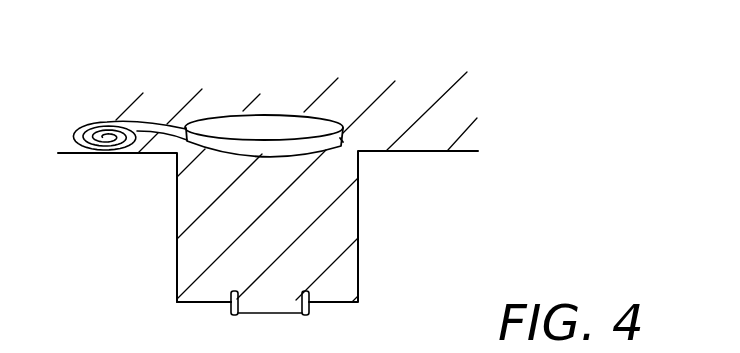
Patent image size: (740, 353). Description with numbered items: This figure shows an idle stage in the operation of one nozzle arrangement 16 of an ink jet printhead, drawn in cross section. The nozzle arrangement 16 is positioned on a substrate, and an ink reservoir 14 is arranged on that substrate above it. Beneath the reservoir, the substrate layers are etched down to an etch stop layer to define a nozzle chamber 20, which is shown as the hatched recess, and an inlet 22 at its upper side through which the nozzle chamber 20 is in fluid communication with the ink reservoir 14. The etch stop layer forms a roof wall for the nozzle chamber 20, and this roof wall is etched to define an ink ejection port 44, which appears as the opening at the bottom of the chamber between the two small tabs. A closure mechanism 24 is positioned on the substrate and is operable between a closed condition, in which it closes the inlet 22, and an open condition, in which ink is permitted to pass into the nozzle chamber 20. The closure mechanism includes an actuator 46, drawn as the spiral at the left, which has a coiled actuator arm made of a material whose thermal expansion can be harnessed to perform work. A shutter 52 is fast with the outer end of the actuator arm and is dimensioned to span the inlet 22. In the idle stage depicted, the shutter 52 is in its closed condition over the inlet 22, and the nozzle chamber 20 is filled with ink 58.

The ink reservoir 14 is at (361, 21).
The nozzle arrangement 16 is at (166, 83).
The nozzle chamber 20 is at (195, 208).
The inlet 22 is at (350, 146).
The closure mechanism 24 is at (231, 116).
The ink ejection port 44 is at (278, 294).
The actuator 46 is at (100, 122).
The shutter 52 is at (289, 111).
The ink 58 is at (197, 267).